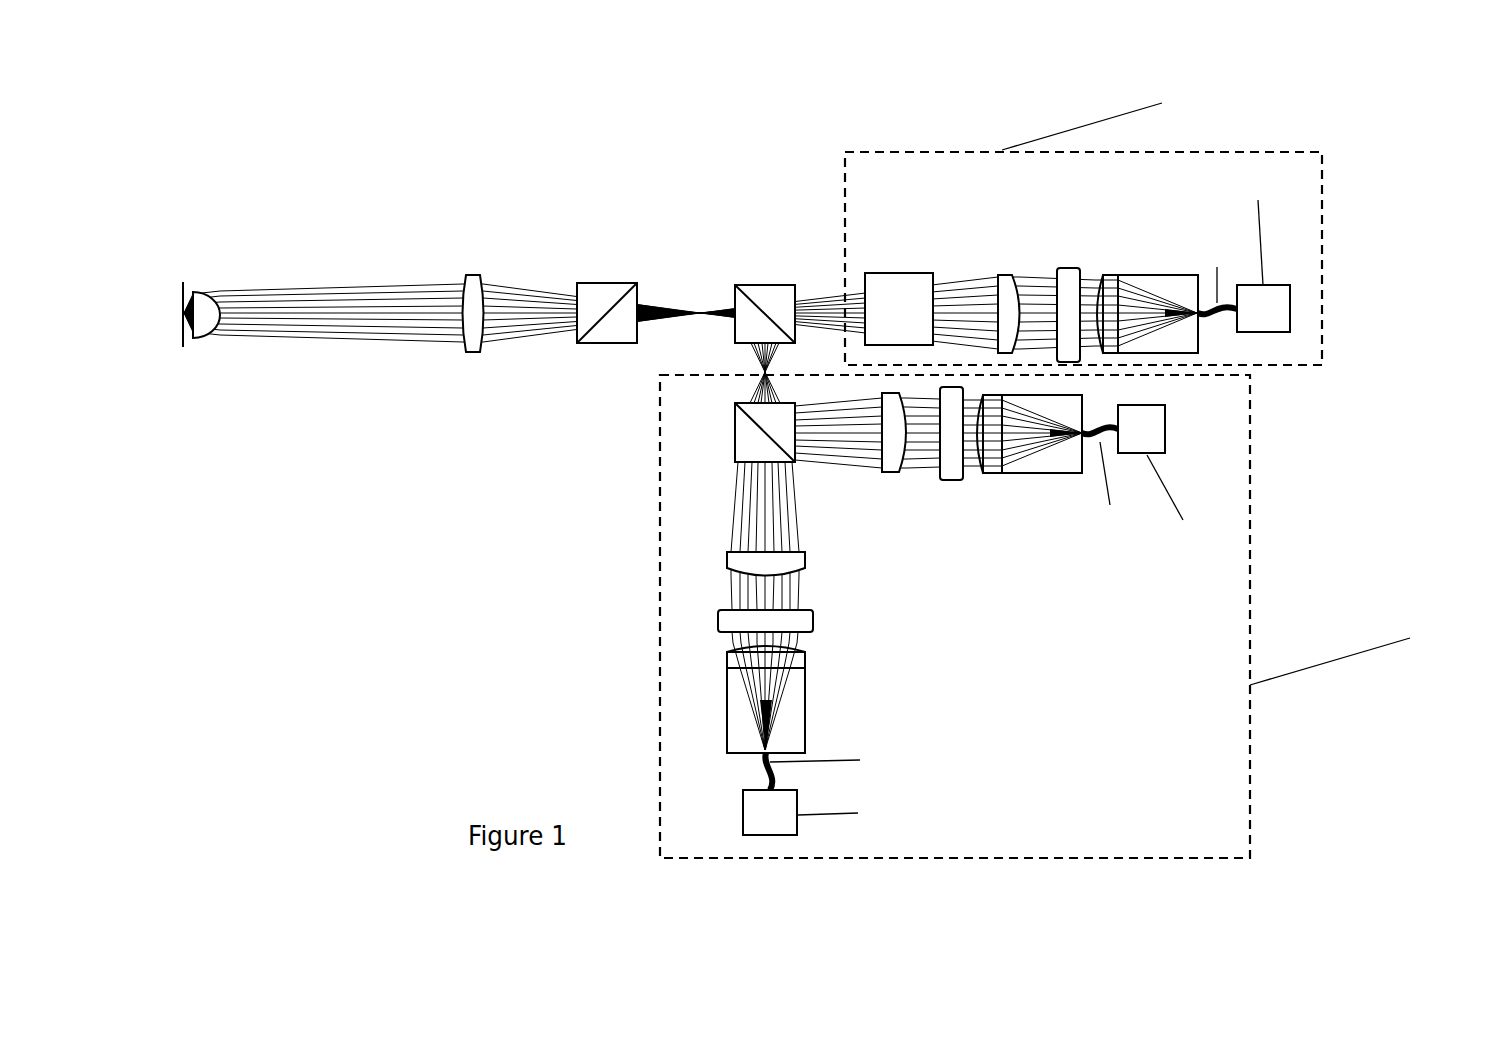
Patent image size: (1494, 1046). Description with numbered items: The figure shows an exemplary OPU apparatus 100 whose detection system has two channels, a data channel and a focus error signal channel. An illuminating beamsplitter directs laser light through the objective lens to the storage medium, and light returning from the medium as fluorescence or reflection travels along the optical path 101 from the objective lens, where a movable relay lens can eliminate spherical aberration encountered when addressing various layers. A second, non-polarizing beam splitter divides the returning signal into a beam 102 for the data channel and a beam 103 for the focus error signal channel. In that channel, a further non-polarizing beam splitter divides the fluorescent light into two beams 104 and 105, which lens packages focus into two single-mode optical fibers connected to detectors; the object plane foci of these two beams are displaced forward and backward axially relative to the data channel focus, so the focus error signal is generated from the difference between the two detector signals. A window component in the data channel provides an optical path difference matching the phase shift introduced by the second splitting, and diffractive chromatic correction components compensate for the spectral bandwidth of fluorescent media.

The OPU apparatus embodiment 100 is at (785, 461).
The optical path 101 is at (215, 215).
The data channel beam 102 is at (807, 297).
The FES channel beam 103 is at (763, 365).
The first FES beam 104 is at (835, 438).
The second FES beam 105 is at (770, 510).